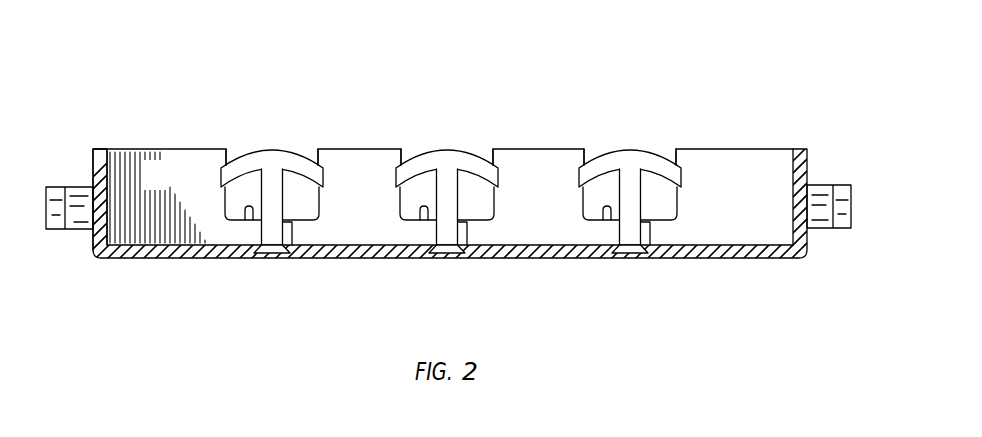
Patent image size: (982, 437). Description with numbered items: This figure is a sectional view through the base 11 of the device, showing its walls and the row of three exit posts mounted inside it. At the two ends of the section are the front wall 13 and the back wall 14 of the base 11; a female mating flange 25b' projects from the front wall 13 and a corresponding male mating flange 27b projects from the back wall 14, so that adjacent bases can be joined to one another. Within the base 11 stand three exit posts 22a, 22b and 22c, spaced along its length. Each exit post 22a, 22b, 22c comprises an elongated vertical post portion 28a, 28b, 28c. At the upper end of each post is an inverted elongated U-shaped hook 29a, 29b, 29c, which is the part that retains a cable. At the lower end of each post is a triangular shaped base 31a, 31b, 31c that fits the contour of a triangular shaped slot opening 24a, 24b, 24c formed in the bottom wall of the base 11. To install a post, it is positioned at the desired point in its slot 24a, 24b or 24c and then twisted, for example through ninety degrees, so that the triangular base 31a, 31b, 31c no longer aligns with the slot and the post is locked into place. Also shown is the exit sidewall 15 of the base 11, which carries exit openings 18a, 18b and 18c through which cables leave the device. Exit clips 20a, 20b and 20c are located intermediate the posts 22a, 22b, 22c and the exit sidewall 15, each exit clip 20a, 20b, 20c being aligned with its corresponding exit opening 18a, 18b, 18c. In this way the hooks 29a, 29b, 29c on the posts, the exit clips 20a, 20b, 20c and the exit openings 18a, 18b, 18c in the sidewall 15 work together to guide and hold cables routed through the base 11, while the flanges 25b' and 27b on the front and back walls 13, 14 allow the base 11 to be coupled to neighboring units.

The base 11 is at (809, 152).
The front wall 13 is at (803, 147).
The back wall 14 is at (100, 149).
The exit sidewall 15 is at (165, 187).
The exit opening 18a is at (278, 114).
The exit opening 18b is at (455, 114).
The exit opening 18c is at (638, 114).
The exit clip 20a is at (235, 256).
The exit clip 20b is at (410, 256).
The exit clip 20c is at (594, 256).
The exit post 22a is at (311, 256).
The exit post 22b is at (491, 252).
The exit post 22c is at (677, 233).
The triangular shaped slot opening 24a is at (306, 263).
The triangular shaped slot opening 24b is at (481, 263).
The triangular shaped slot opening 24c is at (666, 263).
The female mating flange 25b' is at (834, 176).
The male mating flange 27b is at (77, 186).
The elongated vertical post portion 28a is at (247, 241).
The elongated vertical post portion 28b is at (422, 241).
The elongated vertical post portion 28c is at (606, 242).
The inverted elongated U-shaped hook 29a is at (267, 120).
The inverted elongated U-shaped hook 29b is at (444, 120).
The inverted elongated U-shaped hook 29c is at (626, 120).
The triangular shaped base 31a is at (277, 289).
The triangular shaped base 31b is at (453, 289).
The triangular shaped base 31c is at (637, 289).